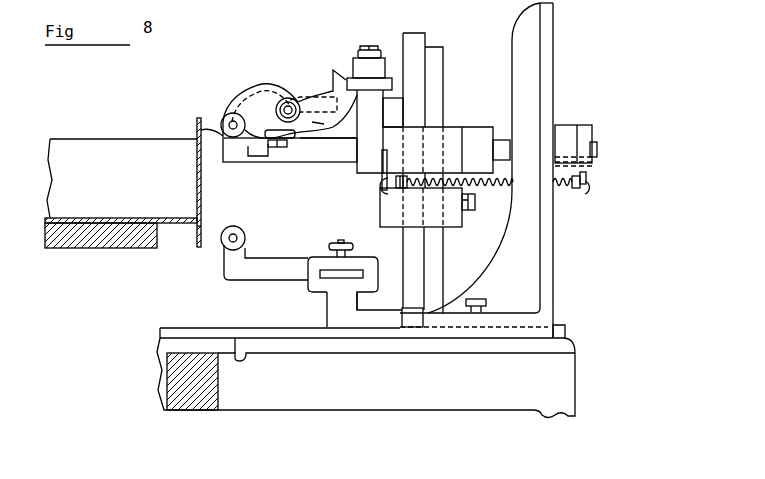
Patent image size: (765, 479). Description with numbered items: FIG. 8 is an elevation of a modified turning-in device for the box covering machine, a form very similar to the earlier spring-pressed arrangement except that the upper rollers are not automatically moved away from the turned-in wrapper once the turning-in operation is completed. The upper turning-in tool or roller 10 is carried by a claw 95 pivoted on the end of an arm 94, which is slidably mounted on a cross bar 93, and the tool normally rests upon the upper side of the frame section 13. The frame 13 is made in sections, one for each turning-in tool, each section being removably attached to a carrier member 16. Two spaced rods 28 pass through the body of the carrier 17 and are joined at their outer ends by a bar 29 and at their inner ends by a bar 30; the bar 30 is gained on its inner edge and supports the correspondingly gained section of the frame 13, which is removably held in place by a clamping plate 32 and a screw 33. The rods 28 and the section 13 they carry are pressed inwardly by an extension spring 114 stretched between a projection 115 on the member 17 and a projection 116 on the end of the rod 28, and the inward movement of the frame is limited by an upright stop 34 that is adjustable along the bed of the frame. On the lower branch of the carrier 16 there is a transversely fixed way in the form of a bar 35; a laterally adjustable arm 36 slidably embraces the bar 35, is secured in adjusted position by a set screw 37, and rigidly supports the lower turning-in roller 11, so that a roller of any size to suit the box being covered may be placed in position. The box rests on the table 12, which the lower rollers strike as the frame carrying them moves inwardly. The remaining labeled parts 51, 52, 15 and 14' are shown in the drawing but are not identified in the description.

The upper turning-in roller 10 is at (197, 130).
The bottom plate 51 is at (140, 218).
The table 12 is at (133, 243).
The strip lower end 52 is at (203, 227).
The frame member 13 is at (240, 162).
The bar 30 is at (284, 163).
The spaced rod 28 is at (336, 162).
The clamping plate 32 is at (268, 134).
The screw 33 is at (318, 130).
The claw 95 is at (240, 94).
The arm 94 is at (325, 94).
The cross bar 93 is at (360, 84).
The carrier 17 is at (370, 131).
The carrier member 16 is at (417, 120).
The projection 115 is at (378, 183).
The spring 114 is at (492, 188).
The projection 116 is at (590, 180).
The bar 29 is at (593, 150).
The upright stop 34 is at (476, 170).
The base plate 15 is at (560, 327).
The base 14' is at (366, 378).
The lower turning-in roller 11 is at (246, 236).
The adjustable arm 36 is at (266, 262).
The bar 35 is at (328, 281).
The set screw 37 is at (350, 238).